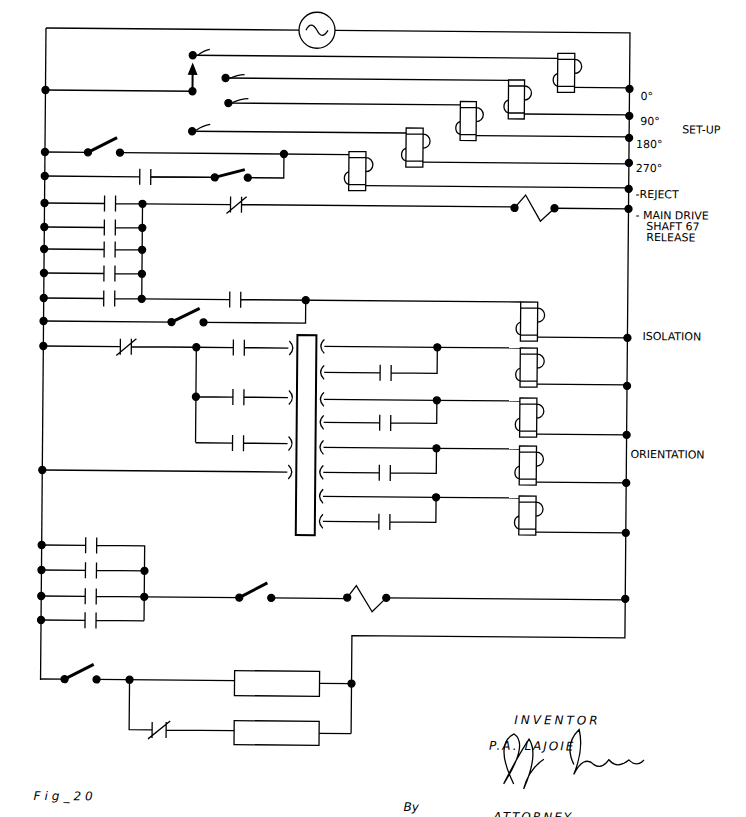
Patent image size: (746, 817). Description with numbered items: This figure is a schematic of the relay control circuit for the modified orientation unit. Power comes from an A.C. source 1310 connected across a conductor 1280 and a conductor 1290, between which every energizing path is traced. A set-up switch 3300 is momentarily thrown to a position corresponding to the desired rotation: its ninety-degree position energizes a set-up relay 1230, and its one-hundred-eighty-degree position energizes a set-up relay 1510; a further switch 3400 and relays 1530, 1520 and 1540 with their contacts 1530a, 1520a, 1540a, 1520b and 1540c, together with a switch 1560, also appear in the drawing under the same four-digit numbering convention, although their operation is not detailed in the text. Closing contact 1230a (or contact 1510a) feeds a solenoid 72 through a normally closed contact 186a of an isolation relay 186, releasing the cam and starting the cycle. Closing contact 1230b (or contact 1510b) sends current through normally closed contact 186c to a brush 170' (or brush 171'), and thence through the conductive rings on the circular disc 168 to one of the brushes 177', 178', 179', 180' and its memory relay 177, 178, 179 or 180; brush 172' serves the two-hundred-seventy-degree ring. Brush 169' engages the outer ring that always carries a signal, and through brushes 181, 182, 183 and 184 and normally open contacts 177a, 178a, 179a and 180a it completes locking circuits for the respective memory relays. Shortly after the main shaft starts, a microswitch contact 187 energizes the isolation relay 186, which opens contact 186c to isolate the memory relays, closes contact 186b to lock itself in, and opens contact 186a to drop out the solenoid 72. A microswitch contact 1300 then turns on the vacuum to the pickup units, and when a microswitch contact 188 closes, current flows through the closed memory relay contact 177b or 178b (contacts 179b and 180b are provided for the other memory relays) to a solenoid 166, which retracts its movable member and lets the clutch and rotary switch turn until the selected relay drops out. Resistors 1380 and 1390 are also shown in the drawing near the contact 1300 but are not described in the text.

The conductor 1280 is at (44, 62).
The conductor 1290 is at (632, 48).
The A.C. source 1310 is at (335, 22).
The set-up switch 3300 is at (188, 64).
The switch 3400 is at (124, 140).
The relay 1530 is at (563, 49).
The set-up relay 1230 is at (513, 76).
The set-up relay 1510 is at (467, 98).
The relay 1520 is at (413, 125).
The relay 1540 is at (354, 149).
The relay contact 1540a is at (147, 170).
The switch 1560 is at (240, 172).
The relay contact 1530a is at (110, 196).
The normally open contact 1230a is at (110, 220).
The contact 1510a is at (110, 243).
The relay contact 1520a is at (110, 266).
The normally closed contact 186a is at (233, 214).
The solenoid 72 is at (530, 210).
The contact 186b is at (240, 292).
The isolation relay 186 is at (532, 300).
The microswitch contact 187 is at (190, 326).
The normally closed contact 186c is at (126, 356).
The brush 170' is at (241, 342).
The normally open contact 1230b is at (238, 382).
The brush 171' is at (273, 383).
The contact 1510b is at (240, 428).
The brush 172' is at (273, 429).
The relay contact 1520b is at (232, 458).
The brush 169' is at (272, 499).
The circular disc 168 is at (315, 333).
The brush 184 is at (327, 533).
The brush 177' is at (382, 339).
The brush 181 is at (334, 368).
The normally open contact 177a is at (392, 380).
The brush 178' is at (382, 392).
The brush 182 is at (334, 419).
The normally open contact 178a is at (392, 430).
The brush 179' is at (381, 440).
The brush 183 is at (334, 468).
The normally open contact 179a is at (392, 480).
The brush 180' is at (381, 489).
The normally open contact 180a is at (385, 512).
The memory relay 177 is at (534, 365).
The memory relay 178 is at (534, 415).
The memory relay 179 is at (533, 462).
The memory relay 180 is at (533, 512).
The normally open contact 177b is at (92, 536).
The normally open contact 178b is at (94, 563).
The relay contact 179b is at (94, 588).
The relay contact 180b is at (94, 613).
The microswitch contact 188 is at (272, 588).
The solenoid 166 is at (364, 584).
The microswitch contact 1300 is at (100, 670).
The resistor 1380 is at (295, 669).
The relay contact 1540c is at (160, 722).
The resistor 1390 is at (266, 745).